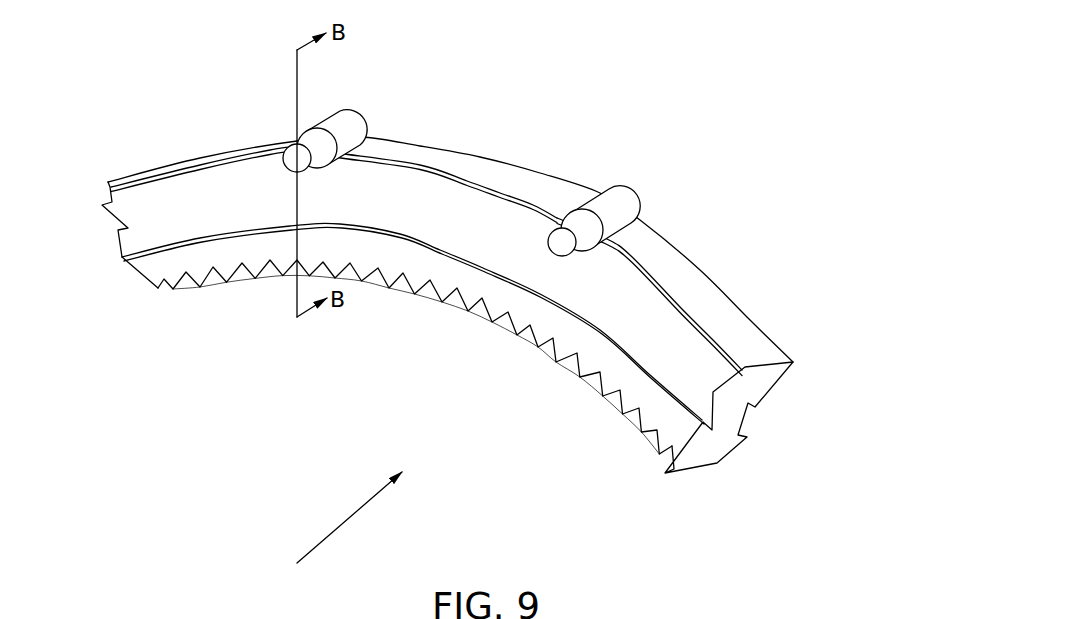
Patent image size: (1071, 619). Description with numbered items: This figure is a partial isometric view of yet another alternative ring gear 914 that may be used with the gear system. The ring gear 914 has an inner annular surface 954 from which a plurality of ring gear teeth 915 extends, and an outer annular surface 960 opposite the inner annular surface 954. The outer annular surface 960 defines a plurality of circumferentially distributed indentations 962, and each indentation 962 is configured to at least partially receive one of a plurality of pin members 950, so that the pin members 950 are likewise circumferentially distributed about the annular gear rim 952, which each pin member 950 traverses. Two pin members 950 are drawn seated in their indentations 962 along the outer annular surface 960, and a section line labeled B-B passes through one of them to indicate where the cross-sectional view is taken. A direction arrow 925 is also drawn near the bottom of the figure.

The ring gear 914 is at (651, 62).
The ring gear teeth 915 is at (177, 287).
The direction of rotation arrow 925 is at (350, 511).
The pin member 950 is at (620, 200).
The annular gear rim 952 is at (157, 187).
The inner annular surface 954 is at (485, 273).
The outer annular surface 960 is at (410, 150).
The indentation 962 is at (640, 253).